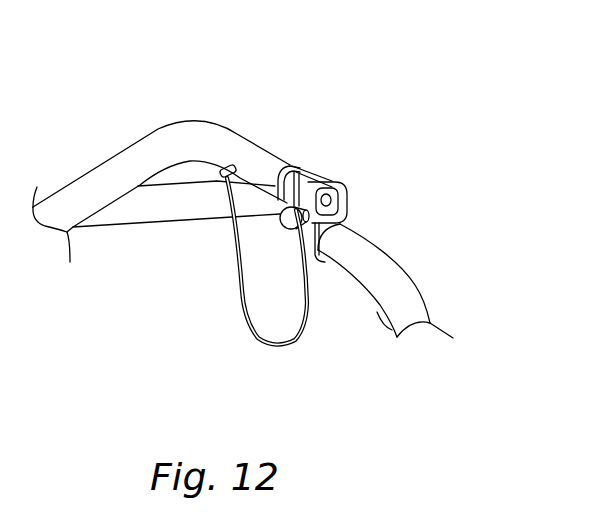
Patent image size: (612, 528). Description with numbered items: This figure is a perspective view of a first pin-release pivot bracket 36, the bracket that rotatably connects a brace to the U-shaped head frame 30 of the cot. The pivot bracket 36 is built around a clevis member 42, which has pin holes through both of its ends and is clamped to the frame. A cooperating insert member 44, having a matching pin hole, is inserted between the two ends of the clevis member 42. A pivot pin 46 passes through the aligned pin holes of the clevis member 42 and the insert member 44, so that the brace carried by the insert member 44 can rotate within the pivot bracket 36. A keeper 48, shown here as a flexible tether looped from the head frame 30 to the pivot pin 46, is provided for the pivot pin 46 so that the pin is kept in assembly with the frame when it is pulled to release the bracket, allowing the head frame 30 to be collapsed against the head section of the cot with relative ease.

The U-shaped head frame 30 is at (420, 280).
The pivot bracket 36 is at (420, 152).
The clevis member 42 is at (348, 222).
The insert member 44 is at (310, 182).
The pivot pin 46 is at (290, 218).
The keeper 48 is at (242, 322).